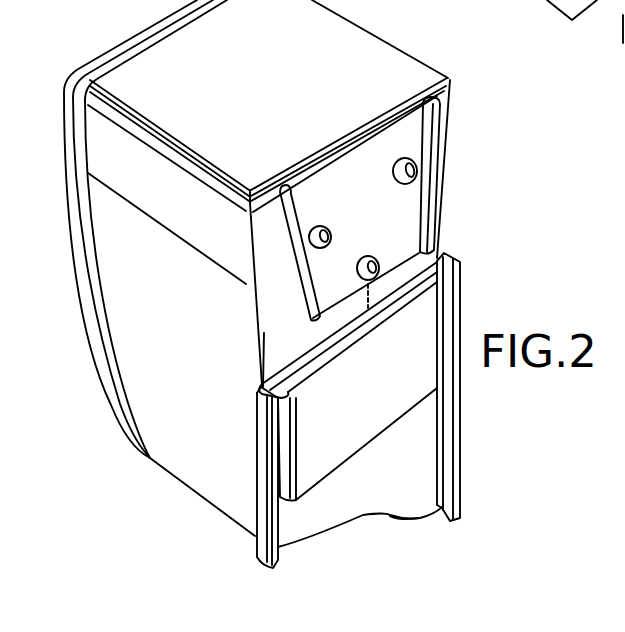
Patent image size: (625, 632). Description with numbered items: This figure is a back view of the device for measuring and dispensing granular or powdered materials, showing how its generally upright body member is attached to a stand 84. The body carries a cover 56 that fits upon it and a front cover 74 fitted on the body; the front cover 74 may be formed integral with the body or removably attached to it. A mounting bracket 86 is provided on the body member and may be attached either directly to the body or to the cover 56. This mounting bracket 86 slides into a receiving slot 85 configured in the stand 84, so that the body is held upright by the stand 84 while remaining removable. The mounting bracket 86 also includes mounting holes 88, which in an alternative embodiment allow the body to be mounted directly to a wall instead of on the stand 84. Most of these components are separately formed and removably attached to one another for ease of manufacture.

The cover 56 is at (349, 29).
The front cover 74 is at (74, 233).
The stand 84 is at (438, 450).
The receiving slot 85 is at (320, 357).
The mounting bracket 86 is at (418, 146).
The mounting holes 88 is at (330, 229).